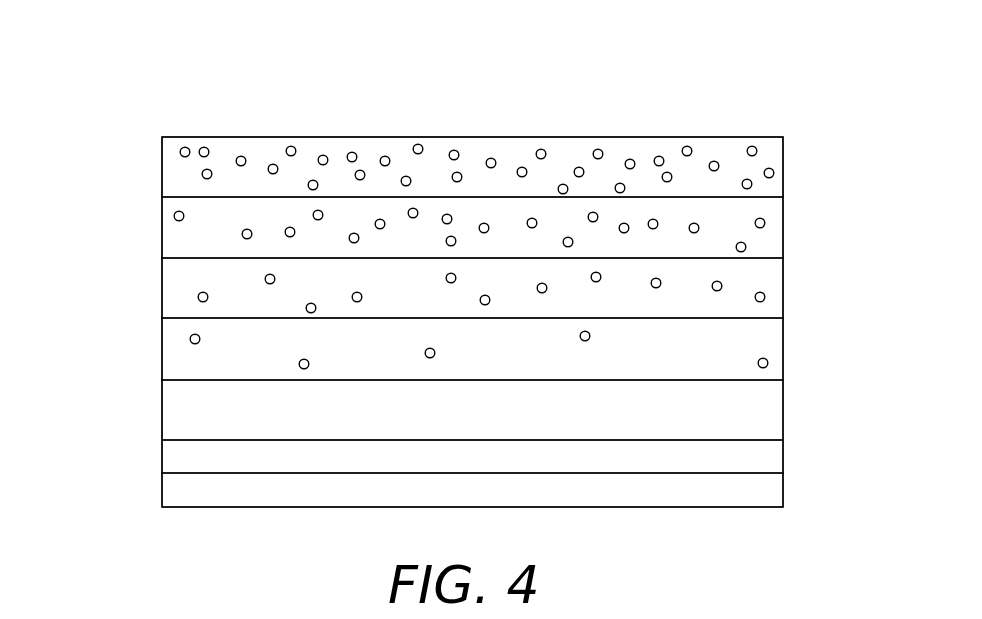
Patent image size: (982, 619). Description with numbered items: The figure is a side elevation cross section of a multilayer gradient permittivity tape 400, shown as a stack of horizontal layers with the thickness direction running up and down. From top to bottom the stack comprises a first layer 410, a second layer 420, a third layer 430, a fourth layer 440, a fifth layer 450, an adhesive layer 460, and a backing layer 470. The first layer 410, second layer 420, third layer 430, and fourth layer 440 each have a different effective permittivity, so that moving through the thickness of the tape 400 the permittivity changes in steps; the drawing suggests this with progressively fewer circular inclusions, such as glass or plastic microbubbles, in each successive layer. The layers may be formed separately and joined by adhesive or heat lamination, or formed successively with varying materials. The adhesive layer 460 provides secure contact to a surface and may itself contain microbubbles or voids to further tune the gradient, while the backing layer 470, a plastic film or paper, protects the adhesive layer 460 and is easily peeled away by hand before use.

The gradient permittivity tape 400 is at (196, 48).
The first layer 410 is at (162, 178).
The second layer 420 is at (783, 229).
The third layer 430 is at (162, 294).
The fourth layer 440 is at (783, 351).
The fifth layer 450 is at (162, 410).
The adhesive layer 460 is at (783, 459).
The backing layer 470 is at (162, 488).